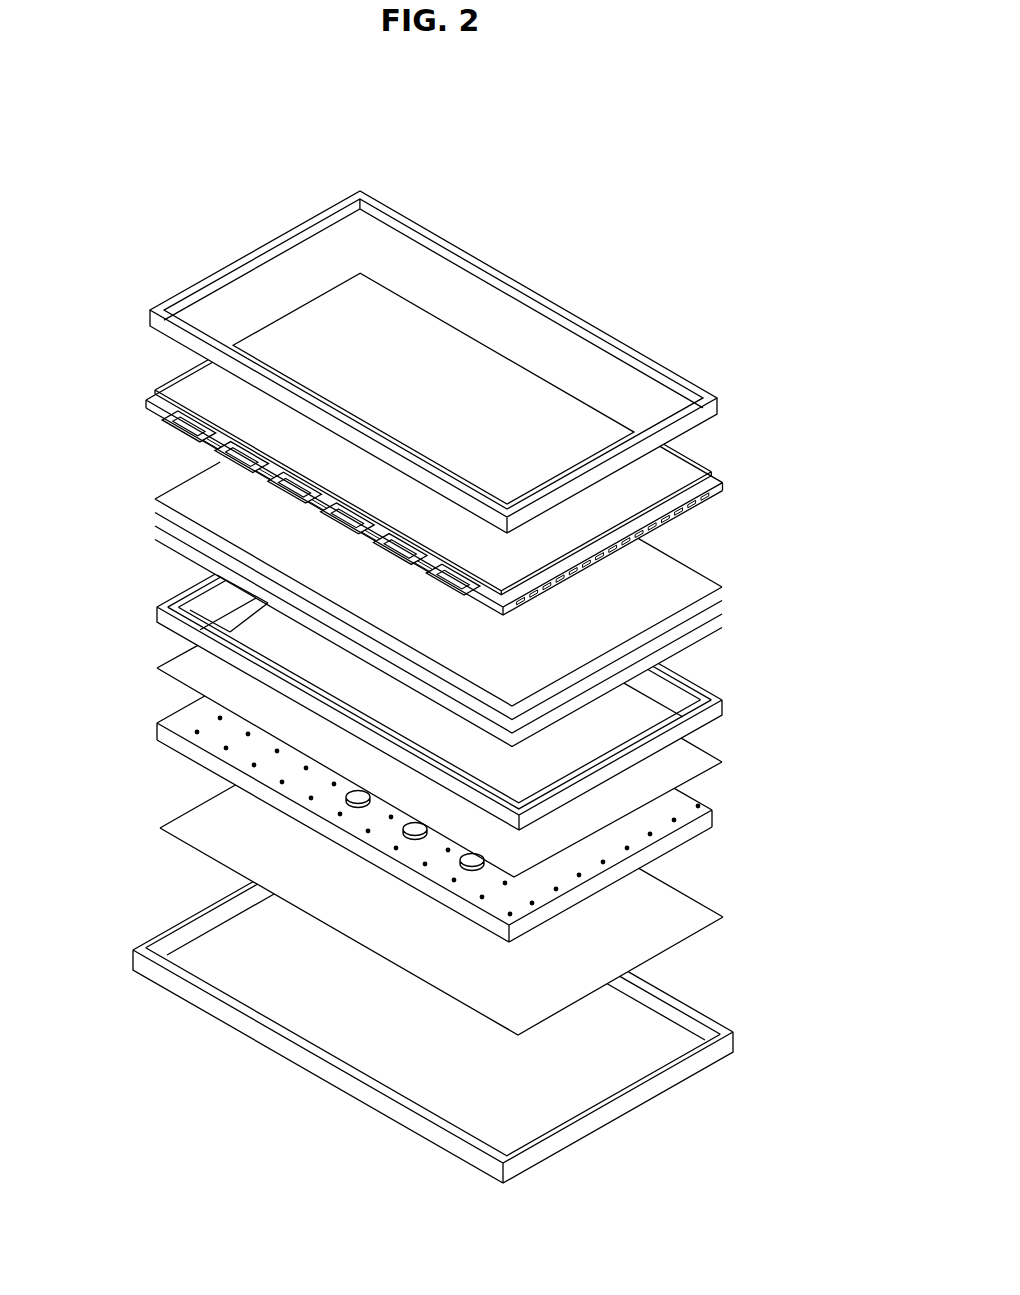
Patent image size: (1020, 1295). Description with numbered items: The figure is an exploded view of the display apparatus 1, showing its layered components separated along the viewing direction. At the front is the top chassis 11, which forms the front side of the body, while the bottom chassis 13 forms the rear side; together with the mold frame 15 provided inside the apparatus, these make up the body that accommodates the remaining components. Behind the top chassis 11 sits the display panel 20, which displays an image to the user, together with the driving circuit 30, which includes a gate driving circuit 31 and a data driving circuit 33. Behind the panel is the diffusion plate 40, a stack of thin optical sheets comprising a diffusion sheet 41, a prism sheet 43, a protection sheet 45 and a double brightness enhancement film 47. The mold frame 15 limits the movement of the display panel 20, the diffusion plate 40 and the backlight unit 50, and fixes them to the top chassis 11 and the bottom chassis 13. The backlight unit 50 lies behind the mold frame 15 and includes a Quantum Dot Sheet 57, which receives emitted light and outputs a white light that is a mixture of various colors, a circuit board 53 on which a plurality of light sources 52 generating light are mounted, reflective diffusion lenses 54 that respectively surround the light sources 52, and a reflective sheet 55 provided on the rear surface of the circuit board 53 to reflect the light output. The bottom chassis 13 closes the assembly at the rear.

The display apparatus 1 is at (470, 157).
The top chassis 11 is at (719, 399).
The bottom chassis 13 is at (735, 1040).
The mold frame 15 is at (723, 701).
The display panel 20 is at (195, 378).
The driving circuit 30 is at (80, 466).
The gate driving circuit 31 is at (522, 614).
The data driving circuit 33 is at (180, 430).
The diffusion plate 40 is at (800, 572).
The diffusion sheet 41 is at (723, 630).
The prism sheet 43 is at (723, 616).
The protection sheet 45 is at (723, 602).
The double brightness enhancement film 47 is at (723, 586).
The backlight unit 50 is at (140, 848).
The light sources 52 is at (252, 764).
The circuit board 53 is at (192, 734).
The reflective diffusion lens 54 is at (346, 797).
The reflective sheet 55 is at (686, 912).
The Quantum Dot Sheet 57 is at (703, 762).